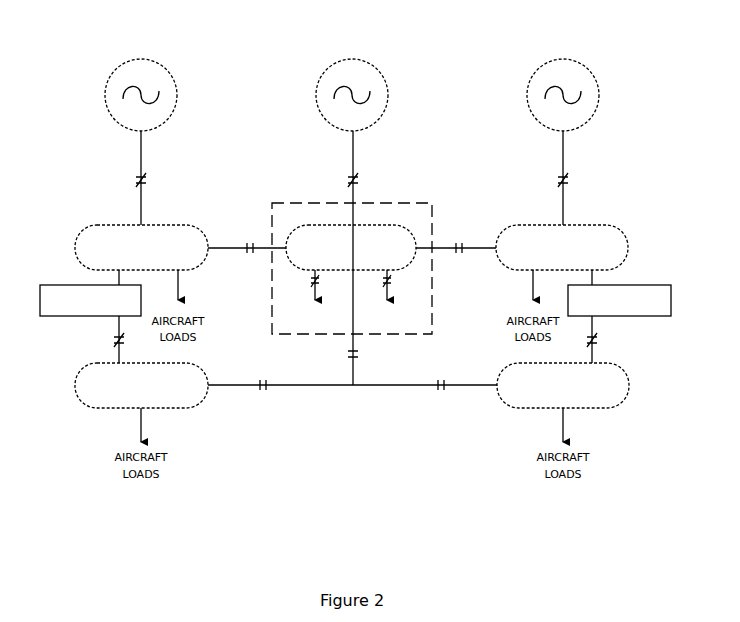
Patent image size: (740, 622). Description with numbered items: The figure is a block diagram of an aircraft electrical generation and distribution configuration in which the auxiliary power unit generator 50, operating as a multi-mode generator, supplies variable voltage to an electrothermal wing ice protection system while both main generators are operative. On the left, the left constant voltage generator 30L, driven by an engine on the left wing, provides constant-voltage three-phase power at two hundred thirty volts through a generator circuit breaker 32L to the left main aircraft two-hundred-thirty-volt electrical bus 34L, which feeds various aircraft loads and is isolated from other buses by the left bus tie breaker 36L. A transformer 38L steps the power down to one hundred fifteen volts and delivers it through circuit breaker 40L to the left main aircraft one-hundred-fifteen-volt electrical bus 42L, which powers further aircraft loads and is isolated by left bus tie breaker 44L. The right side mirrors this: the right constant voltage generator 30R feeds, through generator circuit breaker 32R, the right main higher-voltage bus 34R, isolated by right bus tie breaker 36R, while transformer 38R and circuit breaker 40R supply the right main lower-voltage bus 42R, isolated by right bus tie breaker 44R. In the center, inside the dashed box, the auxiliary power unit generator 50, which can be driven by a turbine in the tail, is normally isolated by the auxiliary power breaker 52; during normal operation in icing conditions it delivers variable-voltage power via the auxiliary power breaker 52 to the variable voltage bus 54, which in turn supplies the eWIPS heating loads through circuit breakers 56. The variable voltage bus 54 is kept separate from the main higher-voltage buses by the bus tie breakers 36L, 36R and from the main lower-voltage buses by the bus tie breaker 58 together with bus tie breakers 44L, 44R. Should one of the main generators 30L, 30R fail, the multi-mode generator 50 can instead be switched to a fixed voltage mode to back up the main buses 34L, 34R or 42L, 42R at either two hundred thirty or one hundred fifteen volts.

The left constant voltage generator 30L is at (110, 113).
The generator circuit breaker (GCB) 32L is at (135, 178).
The left main aircraft 230V electrical bus 34L is at (91, 226).
The left bus tie breaker (L BTB) 36L is at (248, 254).
The transformer 38L is at (60, 284).
The circuit breaker 40L is at (112, 341).
The left main aircraft 115V electrical bus 42L is at (85, 365).
The left bus tie breaker (L BTB) 44L is at (262, 391).
The right constant voltage generator 30R is at (542, 125).
The generator circuit breaker (GCB) 32R is at (557, 180).
The right main aircraft 230V bus 34R is at (622, 228).
The right bus tie breaker (R BTB) 36R is at (464, 254).
The transformer 38R is at (647, 283).
The circuit breaker 40R is at (599, 341).
The right main aircraft 115V bus 42R is at (628, 366).
The right bus tie breaker (R BTB) 44R is at (442, 391).
The auxiliary power unit generator 50 is at (380, 116).
The auxiliary power breaker (APB) 52 is at (346, 180).
The variable voltage bus 54 is at (393, 226).
The circuit breakers 56 is at (309, 283).
The bus tie breaker (BTB) 58 is at (347, 357).